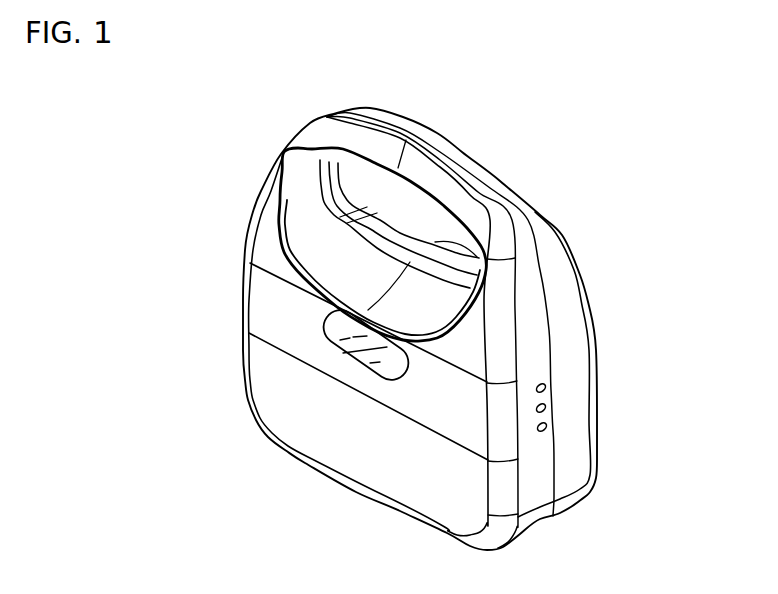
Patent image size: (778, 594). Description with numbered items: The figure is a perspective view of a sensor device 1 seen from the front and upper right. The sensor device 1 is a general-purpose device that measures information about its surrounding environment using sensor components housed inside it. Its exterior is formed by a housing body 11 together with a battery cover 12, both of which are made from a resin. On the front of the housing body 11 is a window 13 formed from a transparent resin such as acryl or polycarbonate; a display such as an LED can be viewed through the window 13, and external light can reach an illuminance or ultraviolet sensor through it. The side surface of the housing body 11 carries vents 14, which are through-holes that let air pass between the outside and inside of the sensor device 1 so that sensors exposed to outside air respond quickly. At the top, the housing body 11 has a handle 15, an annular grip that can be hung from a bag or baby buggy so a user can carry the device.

The sensor device 1 is at (611, 166).
The housing body 11 is at (360, 440).
The battery cover 12 is at (597, 447).
The window 13 is at (330, 338).
The vents 14 is at (543, 425).
The handle 15 is at (437, 143).